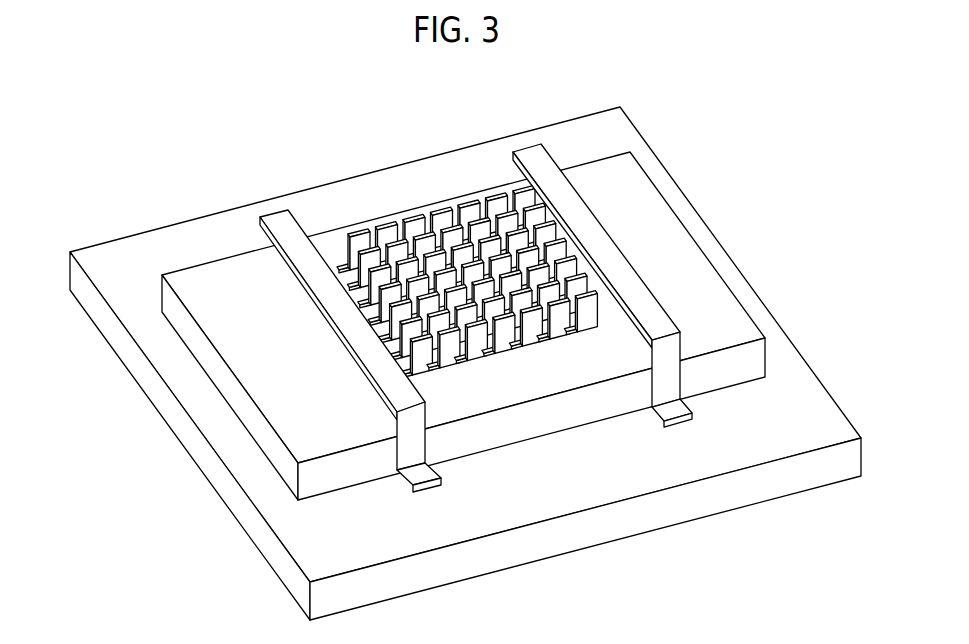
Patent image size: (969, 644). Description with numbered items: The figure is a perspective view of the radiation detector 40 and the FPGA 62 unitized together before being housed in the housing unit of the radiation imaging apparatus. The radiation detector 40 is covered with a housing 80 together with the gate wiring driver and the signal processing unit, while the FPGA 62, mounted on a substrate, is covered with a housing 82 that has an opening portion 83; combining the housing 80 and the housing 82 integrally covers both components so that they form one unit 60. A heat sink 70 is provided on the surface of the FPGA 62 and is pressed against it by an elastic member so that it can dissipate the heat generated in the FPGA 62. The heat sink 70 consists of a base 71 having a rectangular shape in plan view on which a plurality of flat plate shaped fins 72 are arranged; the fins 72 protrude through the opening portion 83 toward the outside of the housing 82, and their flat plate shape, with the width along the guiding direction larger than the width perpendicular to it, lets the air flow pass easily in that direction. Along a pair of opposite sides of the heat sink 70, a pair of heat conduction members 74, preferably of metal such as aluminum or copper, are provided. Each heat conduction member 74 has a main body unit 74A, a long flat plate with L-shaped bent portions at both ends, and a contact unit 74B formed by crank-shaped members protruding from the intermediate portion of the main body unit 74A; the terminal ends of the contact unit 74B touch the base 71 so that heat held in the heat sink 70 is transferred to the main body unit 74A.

The radiation detector 40 is at (486, 343).
The connector 60 is at (446, 326).
The FPGA 62 is at (450, 326).
The heat sink 70 is at (500, 339).
The base 71 is at (415, 378).
The fins 72 is at (568, 328).
The heat conduction member 74 is at (502, 307).
The main body unit 74A is at (556, 196).
The contact unit 74B is at (597, 287).
The housing 80 is at (798, 392).
The housing 82 is at (703, 284).
The opening portion 83 is at (505, 358).